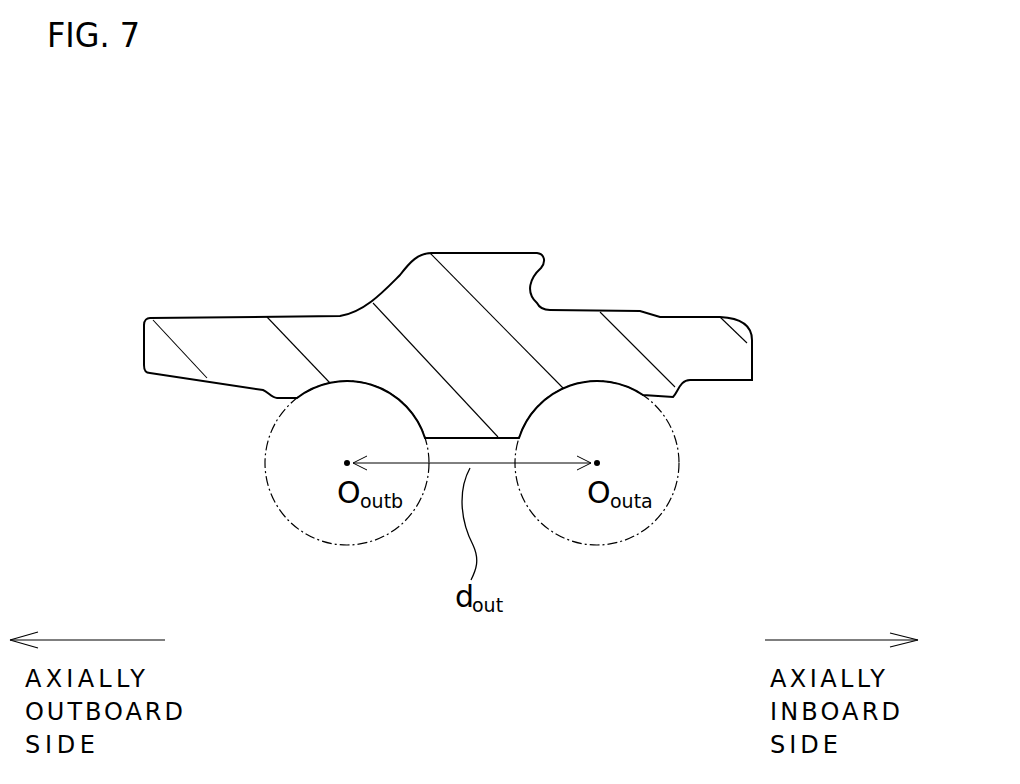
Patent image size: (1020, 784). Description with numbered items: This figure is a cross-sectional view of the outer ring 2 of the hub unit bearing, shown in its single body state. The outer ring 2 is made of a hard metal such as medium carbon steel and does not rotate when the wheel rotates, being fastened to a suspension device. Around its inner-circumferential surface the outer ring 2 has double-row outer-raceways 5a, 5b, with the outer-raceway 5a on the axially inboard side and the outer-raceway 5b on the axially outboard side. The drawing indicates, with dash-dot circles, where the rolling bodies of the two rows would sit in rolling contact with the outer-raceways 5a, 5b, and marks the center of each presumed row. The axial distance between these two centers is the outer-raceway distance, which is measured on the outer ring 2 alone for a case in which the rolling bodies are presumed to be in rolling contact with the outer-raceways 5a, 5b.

The outer ring 2 is at (633, 278).
The outer-raceway on the axially inboard side 5a is at (550, 395).
The outer-raceway on the axially outboard side 5b is at (393, 397).